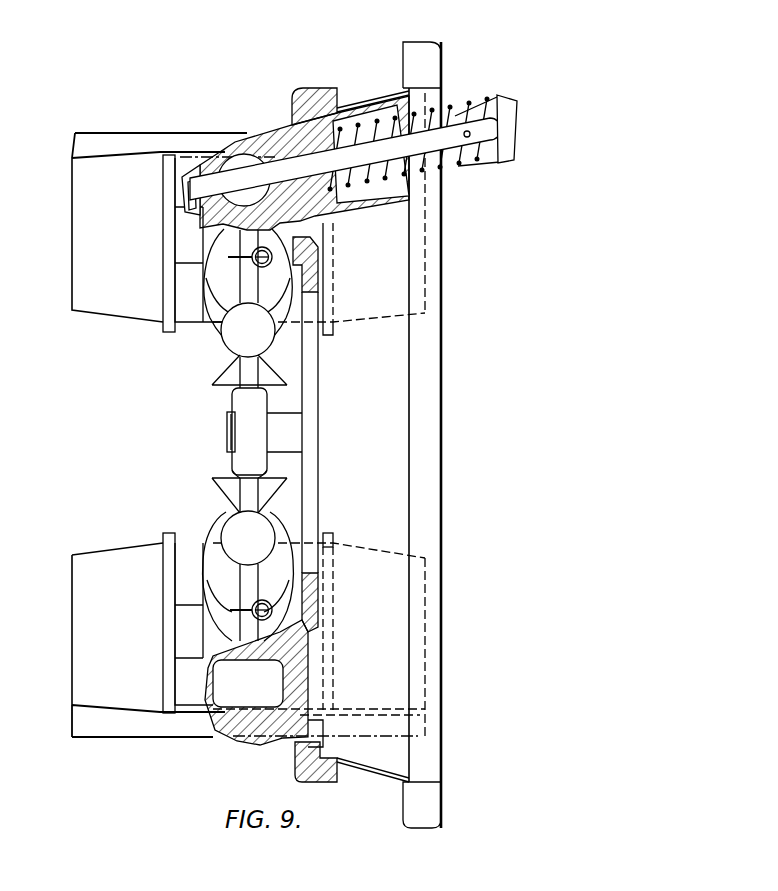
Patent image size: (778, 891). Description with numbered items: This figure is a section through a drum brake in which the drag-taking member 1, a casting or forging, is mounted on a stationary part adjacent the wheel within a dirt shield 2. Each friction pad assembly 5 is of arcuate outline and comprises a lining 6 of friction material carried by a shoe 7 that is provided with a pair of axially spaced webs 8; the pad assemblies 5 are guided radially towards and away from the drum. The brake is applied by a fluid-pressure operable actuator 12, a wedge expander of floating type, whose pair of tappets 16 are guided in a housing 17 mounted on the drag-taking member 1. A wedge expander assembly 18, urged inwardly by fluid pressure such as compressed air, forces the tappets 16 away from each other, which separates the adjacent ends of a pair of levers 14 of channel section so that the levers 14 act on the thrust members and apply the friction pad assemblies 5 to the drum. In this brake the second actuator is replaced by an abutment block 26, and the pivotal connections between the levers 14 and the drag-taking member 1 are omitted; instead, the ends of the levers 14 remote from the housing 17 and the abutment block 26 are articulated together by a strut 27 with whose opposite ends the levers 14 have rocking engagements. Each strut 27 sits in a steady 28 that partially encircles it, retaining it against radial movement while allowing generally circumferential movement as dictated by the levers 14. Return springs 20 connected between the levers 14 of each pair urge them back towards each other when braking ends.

The drag-taking member 1 is at (324, 576).
The dirt shield 2 is at (432, 513).
The friction pad assembly 5 is at (98, 240).
The lining 6 is at (131, 136).
The shoe 7 is at (100, 212).
The webs 8 is at (172, 332).
The fluid-pressure operable actuator 12 is at (306, 140).
The levers 14 is at (247, 376).
The tappets 16 is at (241, 158).
The housing 17 is at (292, 124).
The wedge expander assembly 18 is at (264, 170).
The return springs 20 is at (304, 284).
The abutment block 26 is at (265, 733).
The strut 27 is at (238, 488).
The steady 28 is at (236, 455).